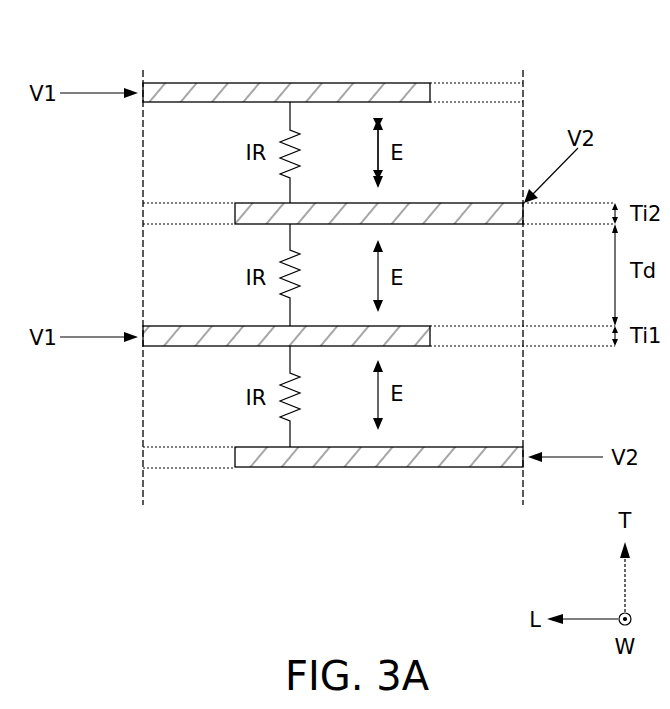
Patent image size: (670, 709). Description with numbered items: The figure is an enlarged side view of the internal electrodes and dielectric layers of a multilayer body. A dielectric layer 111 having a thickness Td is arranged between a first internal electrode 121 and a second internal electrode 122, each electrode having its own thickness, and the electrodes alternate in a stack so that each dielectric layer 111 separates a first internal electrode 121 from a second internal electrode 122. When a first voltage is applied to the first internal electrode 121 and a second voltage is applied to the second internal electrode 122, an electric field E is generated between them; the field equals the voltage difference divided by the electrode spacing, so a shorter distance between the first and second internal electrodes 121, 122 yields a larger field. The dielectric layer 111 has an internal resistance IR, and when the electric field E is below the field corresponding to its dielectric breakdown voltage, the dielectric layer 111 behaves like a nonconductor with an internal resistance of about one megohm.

The dielectric layer 111 is at (330, 265).
The first internal electrode 121 is at (148, 344).
The second internal electrode 122 is at (487, 203).